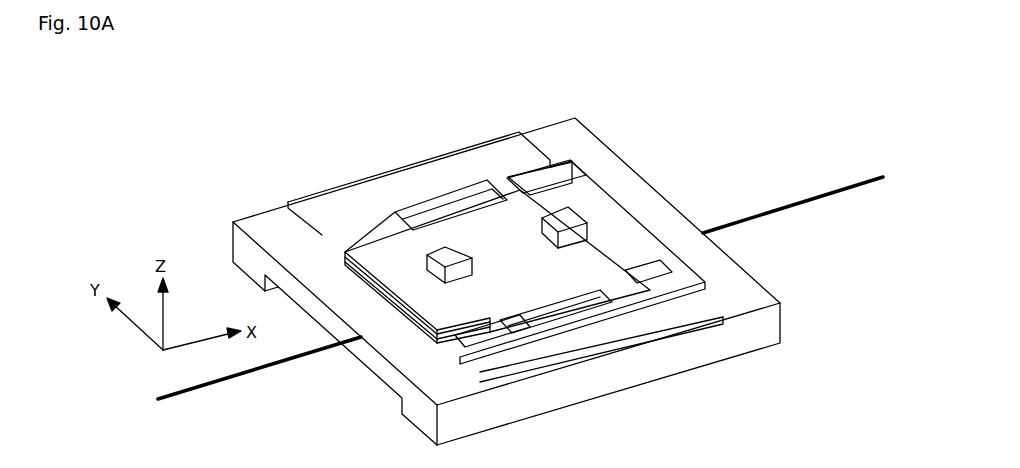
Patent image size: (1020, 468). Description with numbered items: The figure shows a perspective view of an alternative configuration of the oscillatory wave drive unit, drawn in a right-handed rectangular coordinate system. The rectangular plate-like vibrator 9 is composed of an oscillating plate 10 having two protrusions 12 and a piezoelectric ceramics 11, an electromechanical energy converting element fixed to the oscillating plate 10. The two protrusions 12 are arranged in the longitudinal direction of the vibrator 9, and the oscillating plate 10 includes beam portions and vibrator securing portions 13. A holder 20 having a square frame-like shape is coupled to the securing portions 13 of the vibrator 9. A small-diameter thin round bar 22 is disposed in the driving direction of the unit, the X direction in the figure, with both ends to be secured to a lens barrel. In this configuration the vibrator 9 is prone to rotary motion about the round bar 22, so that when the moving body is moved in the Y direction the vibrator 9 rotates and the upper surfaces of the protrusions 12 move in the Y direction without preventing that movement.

The vibrator 9 is at (580, 203).
The oscillating plate 10 is at (613, 243).
The piezoelectric ceramics 11 is at (415, 323).
The protrusions 12 is at (562, 220).
The vibrator securing portions 13 is at (595, 335).
The holder 20 is at (743, 335).
The round bar 22 is at (795, 208).